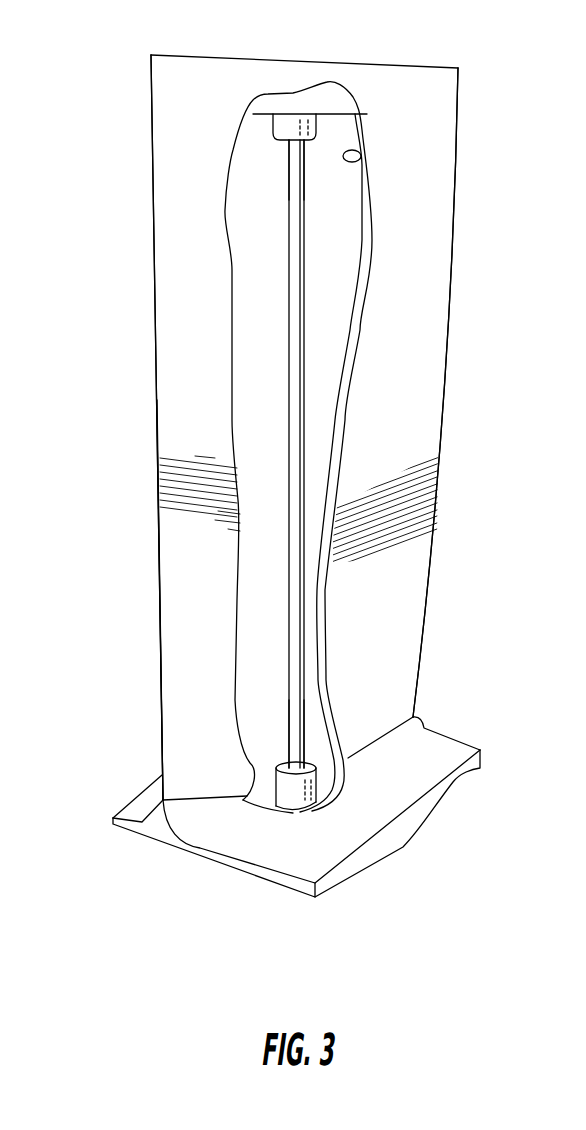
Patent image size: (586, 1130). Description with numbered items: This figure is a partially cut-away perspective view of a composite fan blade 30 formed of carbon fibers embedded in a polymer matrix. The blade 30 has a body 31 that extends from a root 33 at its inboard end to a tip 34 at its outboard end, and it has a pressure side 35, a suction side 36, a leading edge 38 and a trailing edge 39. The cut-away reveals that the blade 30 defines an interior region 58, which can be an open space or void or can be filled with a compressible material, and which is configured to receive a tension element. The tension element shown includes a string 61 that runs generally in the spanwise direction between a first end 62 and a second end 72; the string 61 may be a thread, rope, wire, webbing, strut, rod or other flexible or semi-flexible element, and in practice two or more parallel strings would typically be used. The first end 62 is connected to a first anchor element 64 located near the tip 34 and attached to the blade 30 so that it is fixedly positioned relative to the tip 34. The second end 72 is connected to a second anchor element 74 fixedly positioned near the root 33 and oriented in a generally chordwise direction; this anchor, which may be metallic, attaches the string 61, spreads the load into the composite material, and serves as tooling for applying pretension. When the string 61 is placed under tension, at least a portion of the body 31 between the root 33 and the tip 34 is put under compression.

The fan blade 30 is at (100, 533).
The body 31 is at (372, 633).
The root 33 is at (418, 716).
The tip 34 is at (183, 54).
The pressure side 35 is at (382, 381).
The suction side 36 is at (157, 409).
The leading edge 38 is at (153, 227).
The trailing edge 39 is at (453, 227).
The interior region 58 is at (350, 162).
The string 61 is at (290, 263).
The first end 62 is at (278, 140).
The first anchor element 64 is at (317, 125).
The second end 72 is at (290, 765).
The second anchor element 74 is at (295, 795).